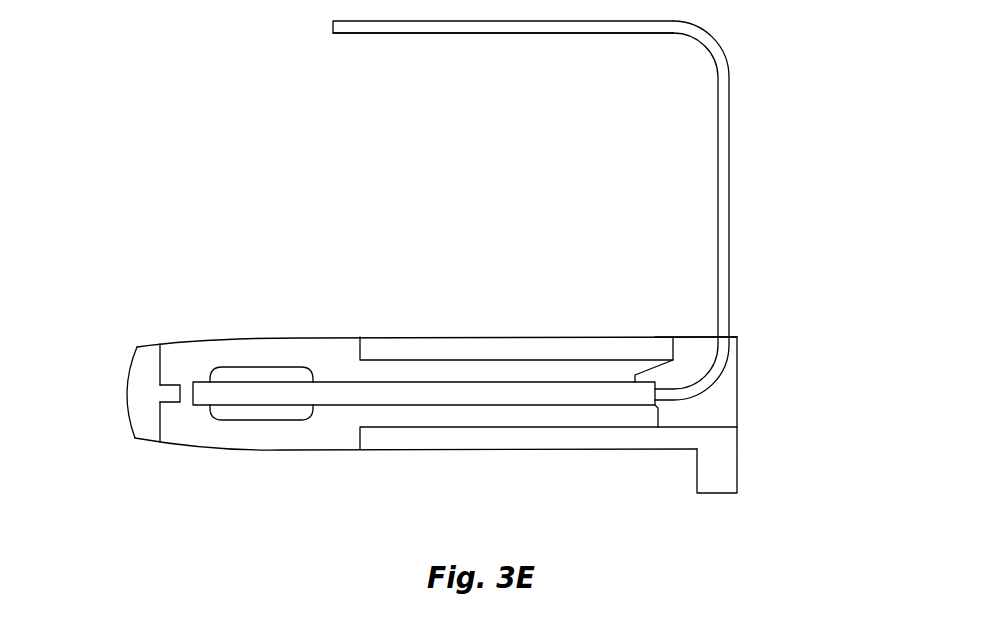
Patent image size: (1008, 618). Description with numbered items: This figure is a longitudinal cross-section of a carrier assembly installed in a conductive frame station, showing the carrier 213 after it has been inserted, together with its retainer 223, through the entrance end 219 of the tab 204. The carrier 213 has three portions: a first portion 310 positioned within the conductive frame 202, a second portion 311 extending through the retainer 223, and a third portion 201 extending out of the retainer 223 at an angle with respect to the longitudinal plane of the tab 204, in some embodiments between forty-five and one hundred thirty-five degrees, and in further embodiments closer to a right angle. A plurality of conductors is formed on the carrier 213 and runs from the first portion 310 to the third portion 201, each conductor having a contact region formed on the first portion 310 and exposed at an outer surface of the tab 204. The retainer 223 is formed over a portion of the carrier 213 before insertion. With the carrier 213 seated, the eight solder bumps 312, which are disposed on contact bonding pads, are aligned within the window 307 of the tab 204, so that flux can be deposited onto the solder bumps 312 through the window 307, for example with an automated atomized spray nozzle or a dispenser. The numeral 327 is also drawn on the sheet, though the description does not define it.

The third portion 201 is at (762, 147).
The conductive frame 202 is at (507, 347).
The tab 204 is at (476, 477).
The carrier 213 is at (662, 26).
The entrance end 219 is at (807, 411).
The retainer 223 is at (723, 413).
The window 307 is at (277, 464).
The first portion 310 is at (344, 361).
The second portion 311 is at (772, 362).
The solder bumps 312 is at (292, 376).
The gap under light guide arm 327 is at (484, 61).